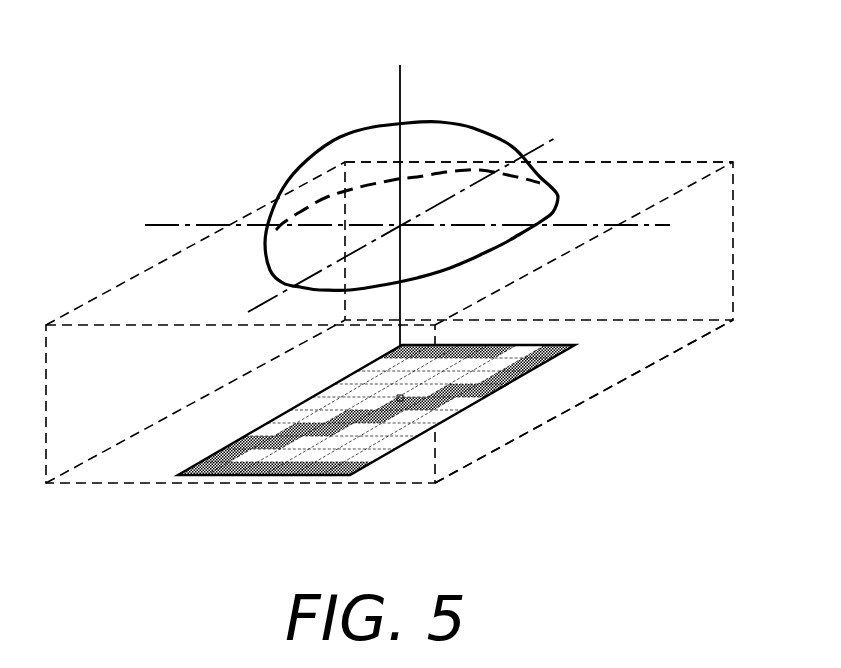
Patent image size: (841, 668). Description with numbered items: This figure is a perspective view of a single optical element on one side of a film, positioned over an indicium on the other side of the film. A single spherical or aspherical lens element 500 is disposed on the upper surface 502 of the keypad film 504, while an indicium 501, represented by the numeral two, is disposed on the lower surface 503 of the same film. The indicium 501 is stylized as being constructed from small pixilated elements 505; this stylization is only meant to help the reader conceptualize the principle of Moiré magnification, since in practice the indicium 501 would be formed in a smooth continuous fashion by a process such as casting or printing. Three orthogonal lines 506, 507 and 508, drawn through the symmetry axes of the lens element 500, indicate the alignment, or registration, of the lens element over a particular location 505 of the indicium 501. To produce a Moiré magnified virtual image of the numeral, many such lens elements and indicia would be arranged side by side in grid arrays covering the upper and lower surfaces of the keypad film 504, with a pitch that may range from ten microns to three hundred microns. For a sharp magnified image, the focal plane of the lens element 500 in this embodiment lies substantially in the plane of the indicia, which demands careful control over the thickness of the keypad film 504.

The lens element 500 is at (347, 138).
The indicium 501 is at (223, 478).
The upper surface 502 is at (665, 177).
The lower surface 503 is at (632, 353).
The keypad film 504 is at (126, 385).
The pixilated elements 505 is at (402, 398).
The orthogonal line 506 is at (553, 137).
The orthogonal line 507 is at (168, 222).
The orthogonal line 508 is at (400, 87).